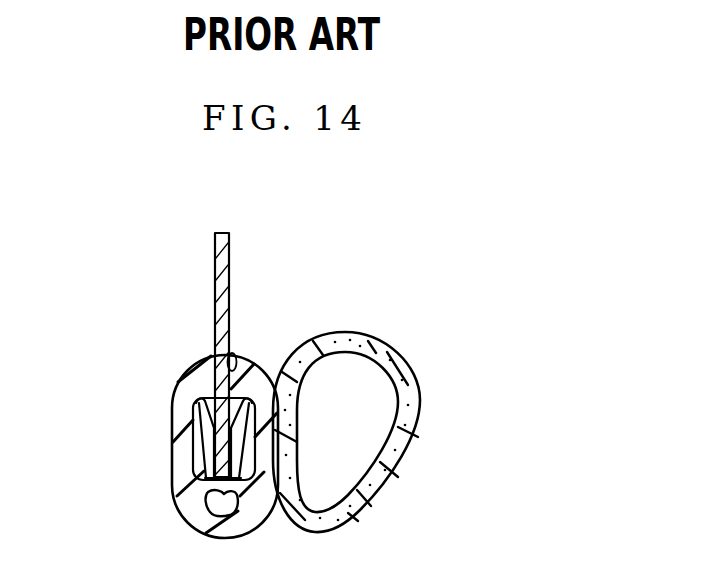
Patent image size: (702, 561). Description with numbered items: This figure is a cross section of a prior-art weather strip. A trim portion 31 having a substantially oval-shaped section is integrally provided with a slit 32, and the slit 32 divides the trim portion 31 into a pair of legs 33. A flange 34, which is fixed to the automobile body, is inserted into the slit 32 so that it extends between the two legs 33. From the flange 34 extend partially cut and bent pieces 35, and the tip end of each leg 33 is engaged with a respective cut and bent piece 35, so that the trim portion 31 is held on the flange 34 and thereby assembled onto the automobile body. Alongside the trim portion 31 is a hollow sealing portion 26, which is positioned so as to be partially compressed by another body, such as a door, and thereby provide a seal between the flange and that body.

The hollow sealing portion 26 is at (420, 412).
The trim portion 31 is at (173, 478).
The slit 32 is at (213, 352).
The legs 33 is at (178, 392).
The flange 34 is at (230, 247).
The partially cut and bent piece 35 is at (178, 422).